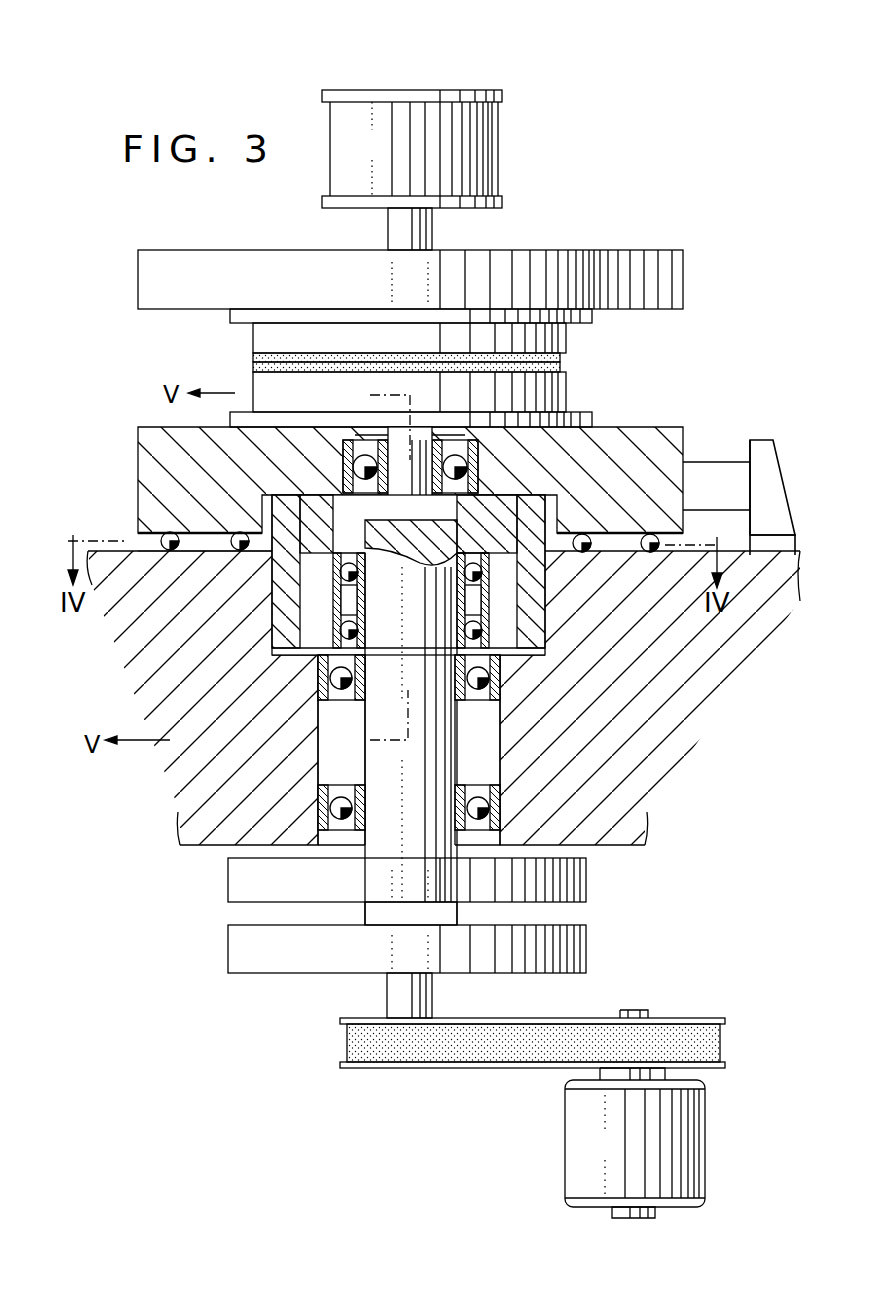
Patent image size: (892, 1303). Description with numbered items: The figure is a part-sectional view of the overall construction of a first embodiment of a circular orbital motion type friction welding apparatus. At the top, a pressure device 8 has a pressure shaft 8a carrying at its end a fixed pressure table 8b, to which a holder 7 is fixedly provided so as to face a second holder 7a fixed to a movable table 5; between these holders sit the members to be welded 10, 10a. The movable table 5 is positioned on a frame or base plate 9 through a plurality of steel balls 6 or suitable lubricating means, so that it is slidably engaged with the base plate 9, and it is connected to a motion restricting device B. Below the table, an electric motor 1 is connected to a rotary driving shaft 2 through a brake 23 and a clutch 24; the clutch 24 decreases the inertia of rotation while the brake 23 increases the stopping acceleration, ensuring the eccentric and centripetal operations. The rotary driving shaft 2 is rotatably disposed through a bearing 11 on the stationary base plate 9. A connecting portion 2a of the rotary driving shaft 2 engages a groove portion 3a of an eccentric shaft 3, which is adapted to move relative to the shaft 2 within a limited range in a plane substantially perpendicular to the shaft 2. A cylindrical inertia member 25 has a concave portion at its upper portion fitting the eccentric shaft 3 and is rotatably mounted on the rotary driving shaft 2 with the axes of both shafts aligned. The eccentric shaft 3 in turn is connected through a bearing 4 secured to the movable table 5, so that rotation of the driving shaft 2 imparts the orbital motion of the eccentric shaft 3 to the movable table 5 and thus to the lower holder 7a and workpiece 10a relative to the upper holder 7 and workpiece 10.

The electric motor 1 is at (705, 1112).
The rotary driving shaft 2 is at (455, 745).
The connecting portion 2a is at (406, 539).
The eccentric shaft 3 is at (430, 440).
The groove portion 3a is at (458, 530).
The bearing 4 is at (343, 468).
The movable table 5 is at (138, 448).
The steel balls 6 is at (160, 540).
The holder 7 is at (566, 345).
The holder 7a is at (566, 392).
The pressure device 8 is at (486, 150).
The pressure shaft 8a is at (432, 236).
The fixed pressure table 8b is at (617, 262).
The base plate 9 is at (802, 558).
The member to be welded 10 is at (254, 357).
The member to be welded 10a is at (255, 368).
The bearing 11 is at (500, 812).
The brake 23 is at (586, 886).
The clutch 24 is at (586, 951).
The cylindrical inertia member 25 is at (545, 613).
The motion restricting device B is at (714, 474).